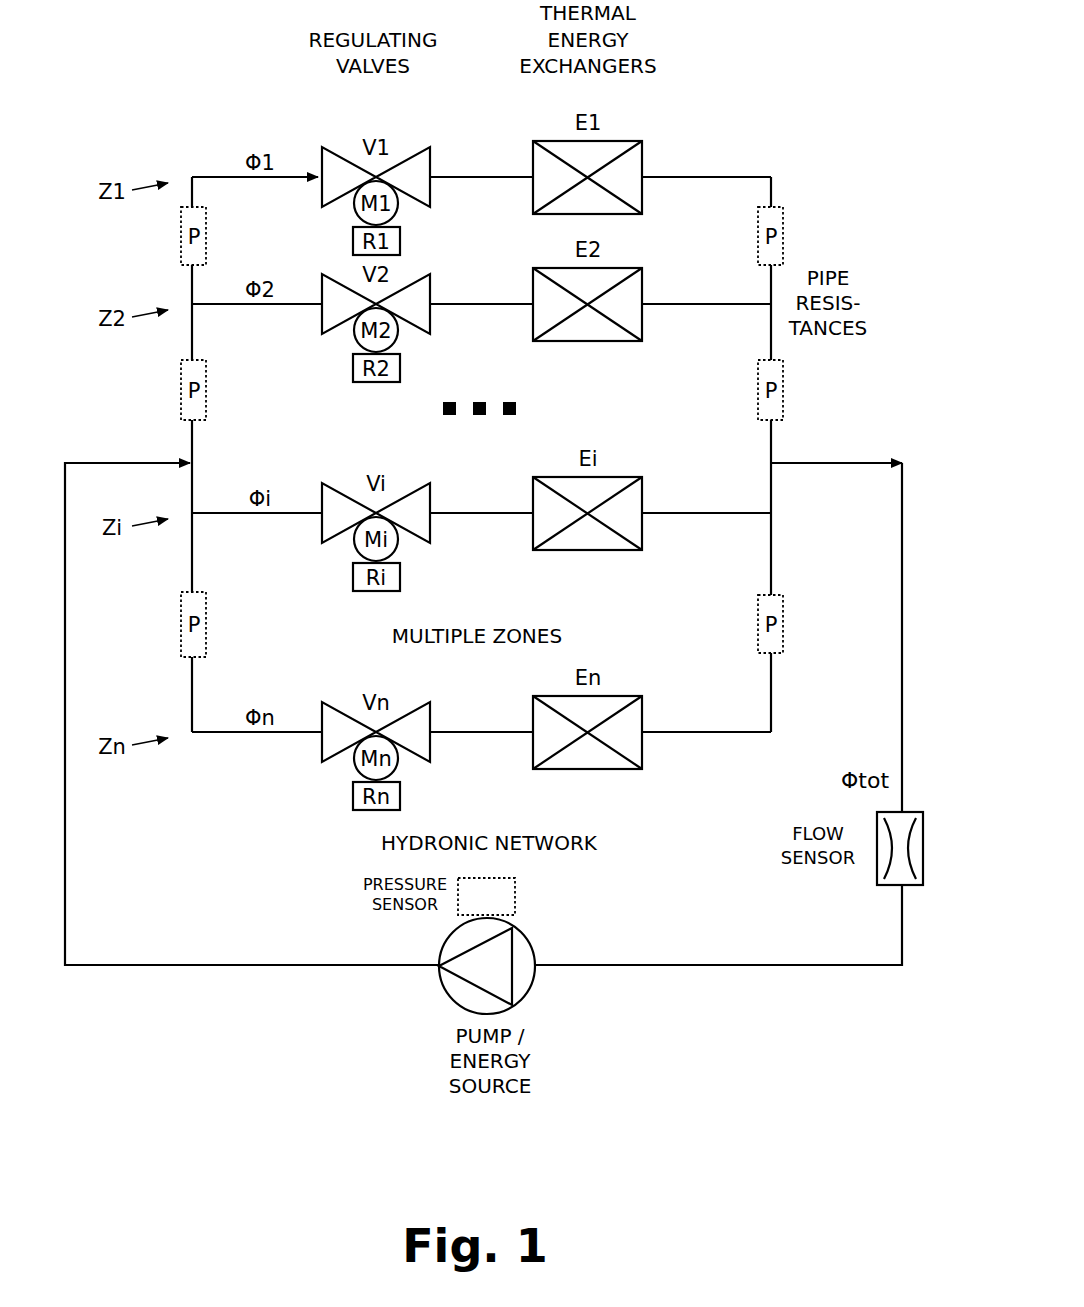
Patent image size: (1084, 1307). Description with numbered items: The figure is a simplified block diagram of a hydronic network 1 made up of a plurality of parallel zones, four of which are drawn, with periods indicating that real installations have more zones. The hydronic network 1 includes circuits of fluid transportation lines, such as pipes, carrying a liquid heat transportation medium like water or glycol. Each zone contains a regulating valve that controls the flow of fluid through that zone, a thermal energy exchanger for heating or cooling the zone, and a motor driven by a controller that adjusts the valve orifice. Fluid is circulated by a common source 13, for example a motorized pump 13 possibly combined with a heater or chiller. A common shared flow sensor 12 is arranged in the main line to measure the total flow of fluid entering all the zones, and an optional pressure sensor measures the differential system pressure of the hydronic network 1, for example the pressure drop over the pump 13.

The hydronic network 1 is at (94, 993).
The flow sensor 12 is at (912, 893).
The common source 13 is at (432, 984).